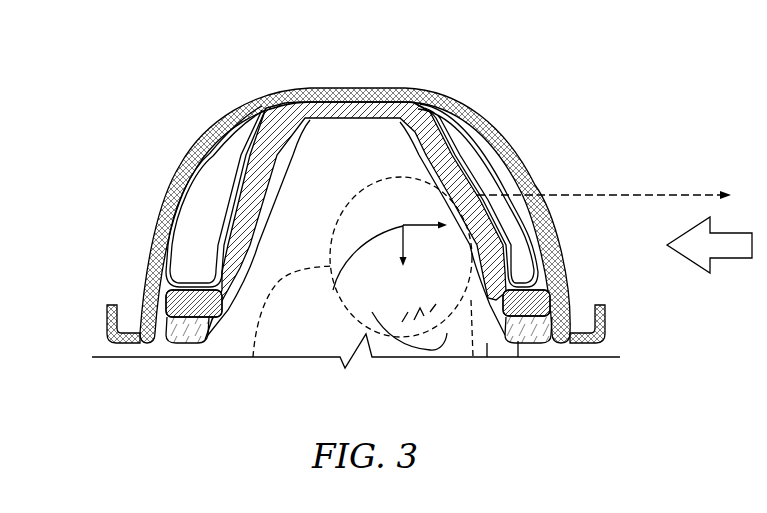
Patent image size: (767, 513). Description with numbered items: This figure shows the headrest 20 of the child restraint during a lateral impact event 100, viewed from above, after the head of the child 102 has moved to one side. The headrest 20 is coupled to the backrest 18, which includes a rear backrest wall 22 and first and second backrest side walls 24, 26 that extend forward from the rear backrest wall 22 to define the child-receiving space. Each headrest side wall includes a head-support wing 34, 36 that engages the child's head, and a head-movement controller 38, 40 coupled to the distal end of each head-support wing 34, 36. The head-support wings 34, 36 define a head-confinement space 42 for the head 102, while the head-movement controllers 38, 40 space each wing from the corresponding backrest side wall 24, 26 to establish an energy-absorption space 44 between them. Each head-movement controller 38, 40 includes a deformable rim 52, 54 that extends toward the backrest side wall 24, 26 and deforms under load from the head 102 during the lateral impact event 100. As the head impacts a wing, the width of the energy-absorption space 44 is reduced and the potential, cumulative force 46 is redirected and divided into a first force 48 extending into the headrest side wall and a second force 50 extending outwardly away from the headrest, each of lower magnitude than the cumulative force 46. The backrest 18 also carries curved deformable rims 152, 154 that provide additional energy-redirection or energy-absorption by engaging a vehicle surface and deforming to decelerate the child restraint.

The backrest 18 is at (355, 209).
The headrest 20 is at (385, 90).
The rear backrest wall 22 is at (347, 181).
The first backrest side wall 24 is at (155, 242).
The second backrest side wall 26 is at (508, 148).
The head-support wing 34 is at (253, 170).
The head-support wing 36 is at (480, 207).
The head-movement controller 38 is at (168, 265).
The head-movement controller 40 is at (543, 263).
The head-confinement space 42 is at (268, 243).
The energy-absorption space 44 is at (230, 152).
The potential, cumulative force 46 is at (696, 195).
The first force 48 is at (403, 226).
The second force 50 is at (345, 258).
The deformable rim 52 is at (187, 302).
The deformable rim 54 is at (526, 302).
The lateral impact event 100 is at (730, 263).
The head of the child 102 is at (485, 168).
The deformable rim 152 is at (104, 322).
The deformable rim 154 is at (607, 316).